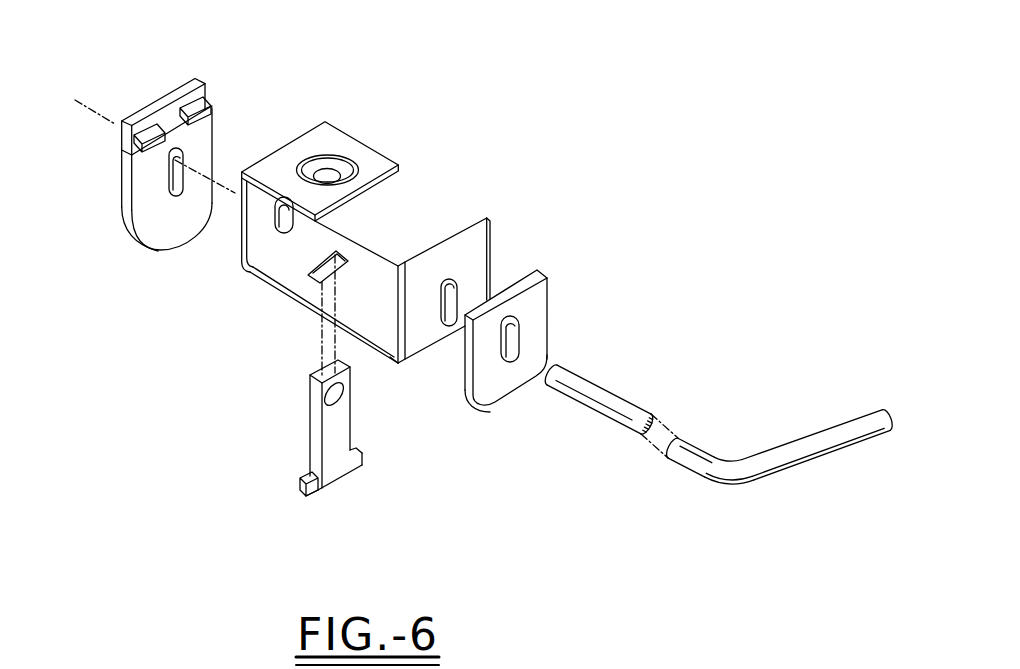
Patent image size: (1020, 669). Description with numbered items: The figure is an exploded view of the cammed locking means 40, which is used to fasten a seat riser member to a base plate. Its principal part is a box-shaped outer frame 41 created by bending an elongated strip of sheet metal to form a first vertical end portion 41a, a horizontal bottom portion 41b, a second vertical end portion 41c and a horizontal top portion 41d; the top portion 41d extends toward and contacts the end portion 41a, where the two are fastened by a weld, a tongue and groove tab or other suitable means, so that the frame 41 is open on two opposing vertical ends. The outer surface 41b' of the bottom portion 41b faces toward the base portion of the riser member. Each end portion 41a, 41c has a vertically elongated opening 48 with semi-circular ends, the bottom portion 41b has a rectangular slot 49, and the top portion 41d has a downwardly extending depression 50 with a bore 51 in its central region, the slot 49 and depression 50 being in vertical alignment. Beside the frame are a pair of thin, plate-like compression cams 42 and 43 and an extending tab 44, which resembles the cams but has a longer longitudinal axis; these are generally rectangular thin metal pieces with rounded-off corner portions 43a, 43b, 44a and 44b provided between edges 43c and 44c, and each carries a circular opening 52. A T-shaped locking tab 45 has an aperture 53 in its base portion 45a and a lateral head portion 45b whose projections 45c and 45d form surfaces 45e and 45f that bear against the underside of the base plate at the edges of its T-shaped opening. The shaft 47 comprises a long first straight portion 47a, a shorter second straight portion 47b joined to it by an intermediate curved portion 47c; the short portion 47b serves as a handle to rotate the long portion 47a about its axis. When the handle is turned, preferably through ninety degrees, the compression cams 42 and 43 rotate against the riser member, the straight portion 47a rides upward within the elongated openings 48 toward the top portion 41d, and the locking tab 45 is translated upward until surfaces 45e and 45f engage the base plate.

The cammed locking means 40 is at (518, 164).
The outer frame 41 is at (318, 318).
The first vertical end portion 41a is at (489, 252).
The horizontal bottom portion 41b is at (361, 275).
The outer surface of the bottom portion 41b' is at (415, 377).
The second vertical end portion 41c is at (247, 250).
The horizontal top portion 41d is at (332, 132).
The compression cam 42 is at (177, 92).
The compression cam 43 is at (548, 307).
The rounded-off corner portion 43a is at (472, 404).
The rounded-off corner portion 43b is at (538, 380).
The edge 43c is at (505, 404).
The extending tab 44 is at (152, 240).
The rounded-off corner portion 44a is at (153, 251).
The rounded-off corner portion 44b is at (214, 208).
The edge 44c is at (175, 248).
The T-shaped locking tab 45 is at (302, 383).
The base portion 45a is at (328, 441).
The head portion 45b is at (338, 488).
The projection 45c is at (314, 496).
The projection 45d is at (364, 463).
The surface 45e is at (304, 478).
The surface 45f is at (358, 451).
The shaft 47 is at (695, 478).
The first straight portion 47a is at (630, 402).
The second straight portion 47b is at (846, 424).
The curved portion 47c is at (740, 484).
The vertically elongated opening 48 is at (300, 242).
The rectangular slot 49 is at (314, 275).
The downwardly extending depression 50 is at (340, 158).
The bore 51 is at (338, 175).
The circular opening 52 is at (174, 162).
The aperture 53 is at (326, 404).